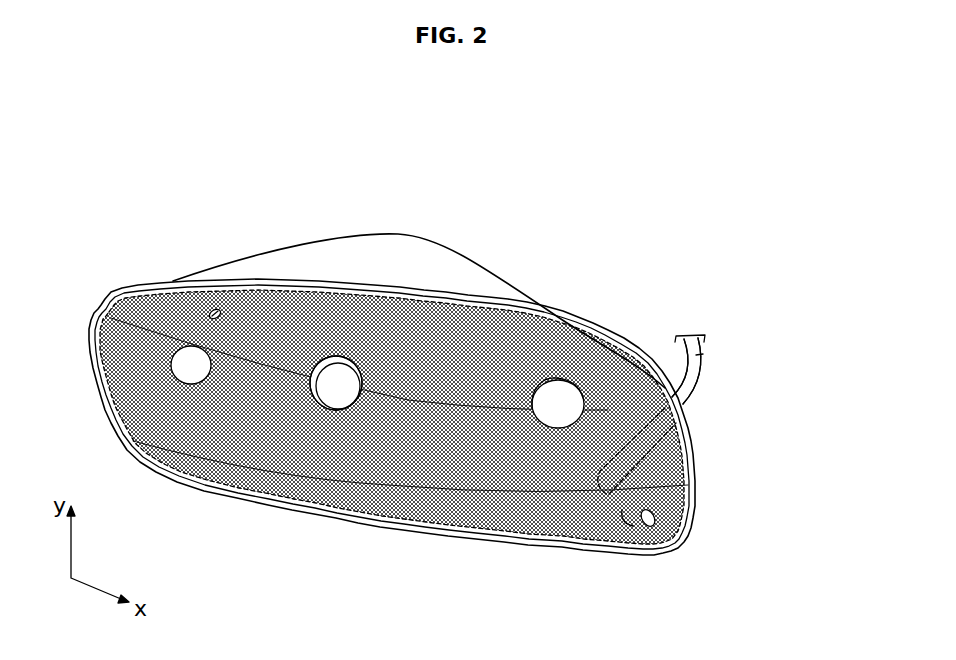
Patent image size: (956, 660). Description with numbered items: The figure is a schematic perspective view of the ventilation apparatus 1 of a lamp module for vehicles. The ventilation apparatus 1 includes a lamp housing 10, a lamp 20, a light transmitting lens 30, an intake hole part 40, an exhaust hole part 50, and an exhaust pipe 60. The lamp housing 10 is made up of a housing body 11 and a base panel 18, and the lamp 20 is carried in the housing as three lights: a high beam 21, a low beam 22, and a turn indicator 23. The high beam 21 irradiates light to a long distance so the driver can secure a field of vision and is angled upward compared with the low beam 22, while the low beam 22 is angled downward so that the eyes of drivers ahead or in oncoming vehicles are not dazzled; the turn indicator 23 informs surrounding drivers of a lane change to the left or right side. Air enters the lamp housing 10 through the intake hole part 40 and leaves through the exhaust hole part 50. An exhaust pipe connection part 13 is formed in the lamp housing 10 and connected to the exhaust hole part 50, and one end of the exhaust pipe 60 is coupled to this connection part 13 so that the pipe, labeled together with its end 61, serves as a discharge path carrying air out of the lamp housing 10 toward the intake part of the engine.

The ventilation apparatus 1 is at (177, 87).
The lamp housing 10 is at (406, 154).
The housing body 11 is at (416, 248).
The base panel 18 is at (459, 323).
The exhaust pipe connection part 13 is at (614, 502).
The lamp 20 is at (320, 347).
The high beam 21 is at (546, 420).
The low beam 22 is at (333, 387).
The turn indicator 23 is at (184, 362).
The light transmitting lens 30 is at (421, 520).
The intake hole part 40 is at (212, 306).
The exhaust hole part 50 is at (683, 530).
The exhaust pipe 60 is at (681, 352).
The connector tube end 61 is at (686, 371).